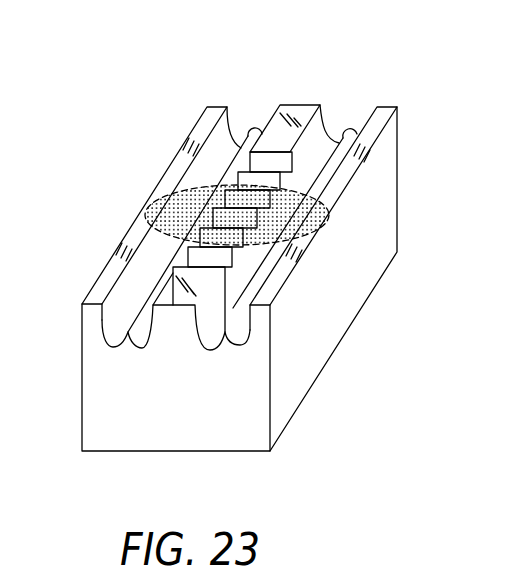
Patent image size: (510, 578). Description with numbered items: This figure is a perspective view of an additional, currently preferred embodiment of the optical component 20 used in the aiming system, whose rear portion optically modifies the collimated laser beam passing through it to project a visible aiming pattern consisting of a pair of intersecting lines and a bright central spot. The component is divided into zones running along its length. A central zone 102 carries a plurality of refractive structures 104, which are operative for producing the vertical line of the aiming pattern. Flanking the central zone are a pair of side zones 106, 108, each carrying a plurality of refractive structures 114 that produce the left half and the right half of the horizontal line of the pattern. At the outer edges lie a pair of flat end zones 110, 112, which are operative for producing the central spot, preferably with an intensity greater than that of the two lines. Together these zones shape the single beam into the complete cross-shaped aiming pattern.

The optical component 20 is at (108, 172).
The central zone 102 is at (320, 96).
The refractive structures 104 is at (212, 271).
The side zone 106 is at (357, 112).
The side zone 108 is at (261, 112).
The flat end zone 110 is at (396, 108).
The flat end zone 112 is at (203, 118).
The refractive structures 114 is at (103, 340).